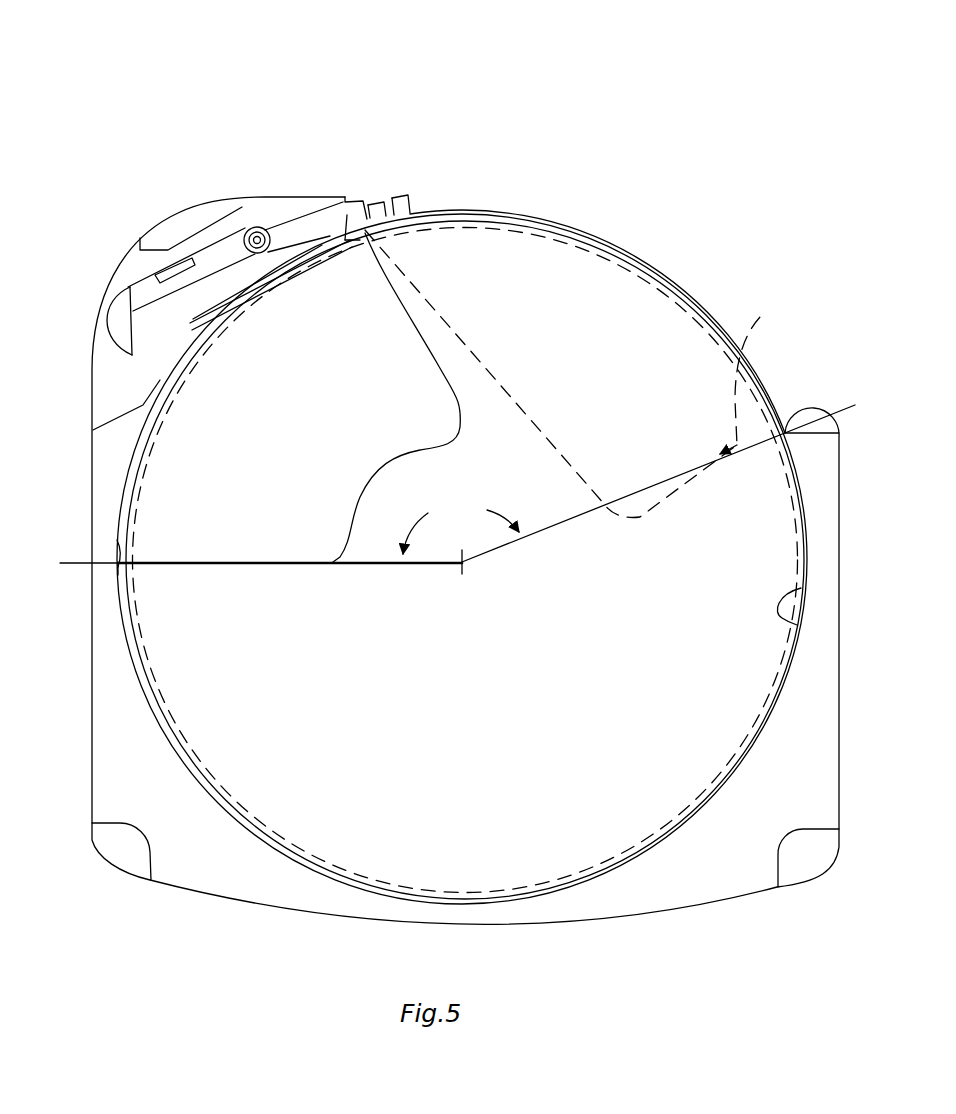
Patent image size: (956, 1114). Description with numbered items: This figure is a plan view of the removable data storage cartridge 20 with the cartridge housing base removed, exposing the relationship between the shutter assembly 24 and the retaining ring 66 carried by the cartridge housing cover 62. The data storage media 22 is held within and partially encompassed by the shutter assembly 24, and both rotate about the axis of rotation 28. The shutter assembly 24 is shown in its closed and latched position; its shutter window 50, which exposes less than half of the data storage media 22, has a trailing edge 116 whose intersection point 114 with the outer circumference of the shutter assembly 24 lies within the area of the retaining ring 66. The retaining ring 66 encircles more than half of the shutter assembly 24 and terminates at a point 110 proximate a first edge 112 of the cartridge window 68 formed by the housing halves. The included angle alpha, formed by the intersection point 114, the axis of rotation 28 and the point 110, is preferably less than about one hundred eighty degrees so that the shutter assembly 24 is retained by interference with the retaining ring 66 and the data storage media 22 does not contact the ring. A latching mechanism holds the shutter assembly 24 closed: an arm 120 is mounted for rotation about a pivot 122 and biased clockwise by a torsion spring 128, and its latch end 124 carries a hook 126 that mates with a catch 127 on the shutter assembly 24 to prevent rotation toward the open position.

The removable data storage cartridge 20 is at (658, 86).
The data storage media 22 is at (140, 470).
The shutter assembly 24 is at (638, 240).
The axis of rotation 28 is at (470, 572).
The shutter window 50 is at (254, 534).
The cartridge housing cover 62 is at (840, 680).
The retaining ring 66 is at (795, 608).
The cartridge window 68 is at (520, 254).
The point 110 is at (788, 428).
The first edge 112 is at (591, 374).
The intersection point 114 is at (118, 560).
The trailing edge 116 is at (155, 562).
The arm 120 is at (134, 270).
The pivot 122 is at (252, 234).
The latch end 124 is at (362, 188).
The hook 126 is at (347, 215).
The catch 127 is at (350, 233).
The torsion spring 128 is at (212, 255).